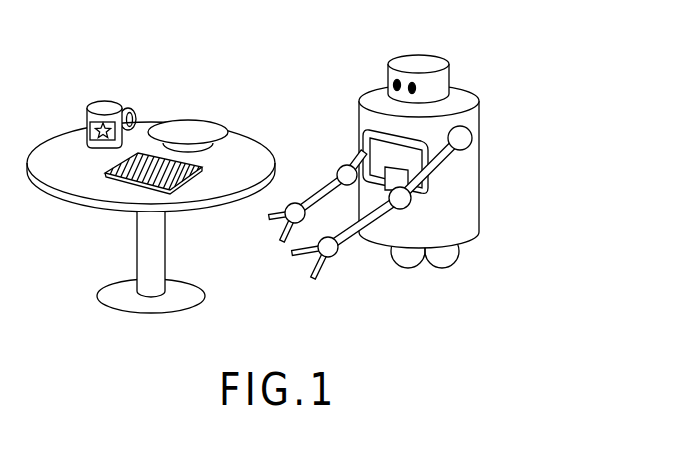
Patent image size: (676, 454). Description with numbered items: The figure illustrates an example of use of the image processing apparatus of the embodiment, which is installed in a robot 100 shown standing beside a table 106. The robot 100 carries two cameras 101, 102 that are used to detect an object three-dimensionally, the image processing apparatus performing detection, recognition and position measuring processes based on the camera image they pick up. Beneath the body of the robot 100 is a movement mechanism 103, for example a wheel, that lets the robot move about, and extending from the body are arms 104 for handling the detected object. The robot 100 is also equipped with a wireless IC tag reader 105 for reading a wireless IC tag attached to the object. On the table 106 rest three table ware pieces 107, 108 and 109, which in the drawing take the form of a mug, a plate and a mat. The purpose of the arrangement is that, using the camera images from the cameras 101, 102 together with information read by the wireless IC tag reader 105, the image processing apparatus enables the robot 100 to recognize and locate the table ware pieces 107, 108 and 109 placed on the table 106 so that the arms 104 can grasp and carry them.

The robot 100 is at (393, 165).
The camera 101 is at (406, 60).
The camera 102 is at (424, 88).
The movement mechanism 103 is at (422, 268).
The arms 104 is at (285, 249).
The wireless IC tag reader 105 is at (362, 153).
The table 106 is at (97, 289).
The table ware piece 107 is at (104, 100).
The table ware piece 108 is at (191, 128).
The table ware piece 109 is at (108, 172).